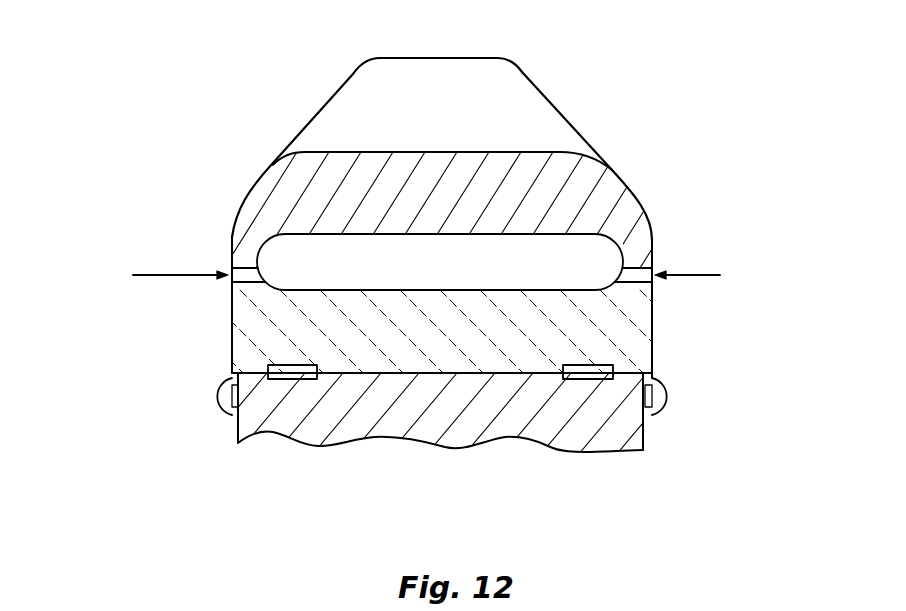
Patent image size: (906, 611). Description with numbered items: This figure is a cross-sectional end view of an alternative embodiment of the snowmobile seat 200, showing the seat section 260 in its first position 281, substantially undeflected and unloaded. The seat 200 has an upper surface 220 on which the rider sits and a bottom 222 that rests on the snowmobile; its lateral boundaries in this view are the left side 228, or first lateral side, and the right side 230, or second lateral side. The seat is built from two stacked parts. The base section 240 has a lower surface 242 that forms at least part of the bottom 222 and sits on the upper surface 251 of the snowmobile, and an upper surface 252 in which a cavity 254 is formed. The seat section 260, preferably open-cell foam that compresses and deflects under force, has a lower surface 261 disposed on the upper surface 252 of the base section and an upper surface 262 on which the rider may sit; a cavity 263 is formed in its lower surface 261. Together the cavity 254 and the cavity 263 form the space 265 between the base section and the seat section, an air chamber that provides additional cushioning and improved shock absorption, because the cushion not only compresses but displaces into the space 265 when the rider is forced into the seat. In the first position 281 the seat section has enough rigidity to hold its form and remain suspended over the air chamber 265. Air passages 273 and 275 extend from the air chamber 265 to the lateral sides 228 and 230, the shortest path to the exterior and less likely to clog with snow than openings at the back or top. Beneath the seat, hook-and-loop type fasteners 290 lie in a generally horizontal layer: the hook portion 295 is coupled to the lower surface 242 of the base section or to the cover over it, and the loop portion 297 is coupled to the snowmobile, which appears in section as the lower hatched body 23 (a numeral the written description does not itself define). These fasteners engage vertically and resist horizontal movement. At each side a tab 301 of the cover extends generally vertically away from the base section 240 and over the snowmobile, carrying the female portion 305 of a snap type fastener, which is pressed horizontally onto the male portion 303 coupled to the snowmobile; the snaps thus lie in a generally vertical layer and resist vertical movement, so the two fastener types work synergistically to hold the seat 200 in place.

The snowmobile seat 200 is at (140, 190).
The upper surface 220 is at (335, 152).
The lower surface 261 is at (308, 234).
The upper surface 262 is at (520, 152).
The cavity 263 is at (458, 234).
The seat section 260 is at (583, 158).
The upper surface 252 is at (277, 232).
The space 265 is at (426, 262).
The cavity 254 is at (590, 250).
The air passage 273 is at (655, 268).
The air passage 275 is at (232, 283).
The right side 230 is at (232, 318).
The left side 228 is at (655, 337).
The first position 281 is at (690, 175).
The tab 301 is at (672, 372).
The base section 240 is at (268, 366).
The lower surface 242 is at (232, 362).
The female portion 305 is at (665, 393).
The male portion 303 is at (645, 425).
The base member 23 is at (582, 440).
The bottom 222 is at (645, 452).
The hook-and-loop type fasteners 290 is at (300, 400).
The loop portion 297 is at (275, 382).
The hook portion 295 is at (353, 380).
The upper surface 251 is at (470, 380).